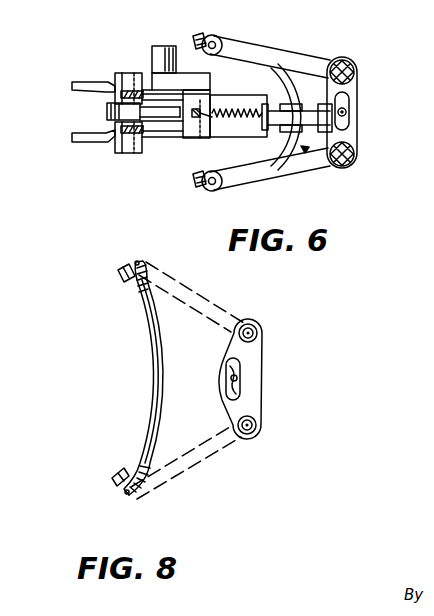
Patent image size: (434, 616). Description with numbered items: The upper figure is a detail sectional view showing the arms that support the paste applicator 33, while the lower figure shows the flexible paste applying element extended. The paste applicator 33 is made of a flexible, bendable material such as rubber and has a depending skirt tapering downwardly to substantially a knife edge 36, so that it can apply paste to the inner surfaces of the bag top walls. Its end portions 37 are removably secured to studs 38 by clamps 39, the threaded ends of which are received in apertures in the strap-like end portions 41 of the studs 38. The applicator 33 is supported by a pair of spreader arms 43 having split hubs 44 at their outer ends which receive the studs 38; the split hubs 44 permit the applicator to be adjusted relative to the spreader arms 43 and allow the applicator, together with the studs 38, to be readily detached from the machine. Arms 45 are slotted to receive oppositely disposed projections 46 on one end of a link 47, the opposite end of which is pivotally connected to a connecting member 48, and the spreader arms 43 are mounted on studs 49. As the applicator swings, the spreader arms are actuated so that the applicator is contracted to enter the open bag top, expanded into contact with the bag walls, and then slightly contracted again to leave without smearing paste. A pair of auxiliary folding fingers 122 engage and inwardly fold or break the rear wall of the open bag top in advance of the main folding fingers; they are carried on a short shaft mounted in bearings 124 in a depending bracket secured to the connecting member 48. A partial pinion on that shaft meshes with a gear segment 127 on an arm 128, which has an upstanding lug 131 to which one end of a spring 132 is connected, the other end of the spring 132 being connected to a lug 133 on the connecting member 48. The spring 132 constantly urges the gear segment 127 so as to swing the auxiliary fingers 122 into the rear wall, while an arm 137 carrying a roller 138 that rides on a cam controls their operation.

In FIG. 6, the paste applicator 33 is at (304, 149).
In FIG. 8, the paste applicator 33 is at (149, 364).
In FIG. 8, the knife edge 36 is at (164, 357).
In FIG. 8, the end portions 37 is at (136, 265).
In FIG. 6, the studs 38 is at (210, 36).
In FIG. 8, the clamps 39 is at (137, 261).
In FIG. 8, the strap-like end portions 41 is at (118, 272).
In FIG. 6, the spreader arms 43 is at (268, 47).
In FIG. 8, the spreader arms 43 is at (213, 302).
In FIG. 6, the split hubs 44 is at (216, 40).
In FIG. 6, the arms 45 is at (358, 90).
In FIG. 8, the arms 45 is at (256, 362).
In FIG. 6, the projections 46 is at (350, 112).
In FIG. 8, the projections 46 is at (240, 378).
In FIG. 6, the link 47 is at (324, 105).
In FIG. 6, the connecting member 48 is at (243, 95).
In FIG. 6, the studs 49 is at (355, 68).
In FIG. 8, the studs 49 is at (258, 333).
In FIG. 6, the auxiliary folding fingers 122 is at (72, 85).
In FIG. 6, the bearings 124 is at (121, 95).
In FIG. 6, the gear segment 127 is at (107, 111).
In FIG. 6, the arm 128 is at (182, 118).
In FIG. 6, the upstanding lug 131 is at (189, 125).
In FIG. 6, the spring 132 is at (241, 122).
In FIG. 6, the lug 133 is at (292, 96).
In FIG. 6, the arm 137 is at (184, 72).
In FIG. 6, the roller 138 is at (157, 52).